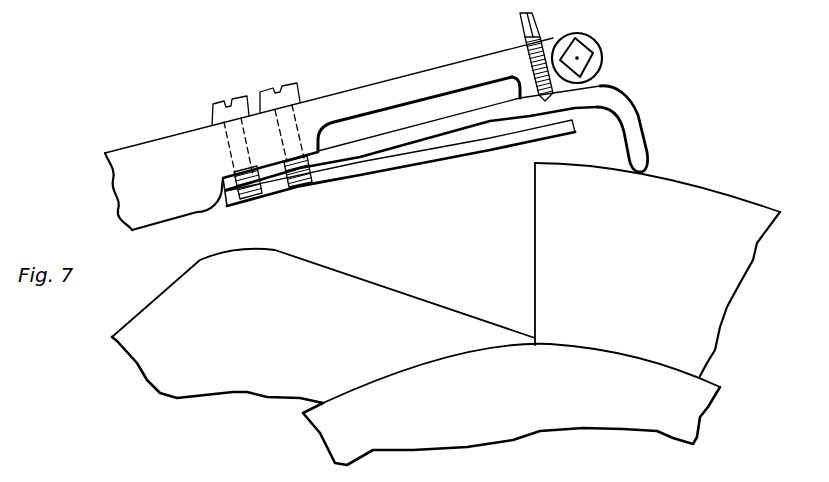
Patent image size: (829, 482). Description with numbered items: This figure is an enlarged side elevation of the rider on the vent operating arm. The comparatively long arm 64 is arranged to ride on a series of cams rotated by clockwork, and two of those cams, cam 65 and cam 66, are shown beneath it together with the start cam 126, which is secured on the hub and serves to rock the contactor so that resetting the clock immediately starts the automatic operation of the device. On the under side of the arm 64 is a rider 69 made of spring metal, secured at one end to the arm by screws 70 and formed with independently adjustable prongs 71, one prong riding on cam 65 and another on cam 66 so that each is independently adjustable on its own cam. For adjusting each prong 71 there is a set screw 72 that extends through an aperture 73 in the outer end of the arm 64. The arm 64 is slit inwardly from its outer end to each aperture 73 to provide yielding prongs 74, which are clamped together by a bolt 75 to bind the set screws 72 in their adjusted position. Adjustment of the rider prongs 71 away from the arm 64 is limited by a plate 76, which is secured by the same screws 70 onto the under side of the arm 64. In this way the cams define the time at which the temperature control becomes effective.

The arm 64 is at (350, 92).
The cam 65 is at (657, 269).
The cam 66 is at (511, 404).
The rider 69 is at (431, 126).
The screws 70 is at (236, 98).
The prong 71 is at (637, 129).
The set screw 72 is at (519, 18).
The aperture 73 is at (538, 44).
The yielding prongs 74 is at (592, 40).
The bolt 75 is at (597, 63).
The plate 76 is at (431, 162).
The start cam 126 is at (323, 326).